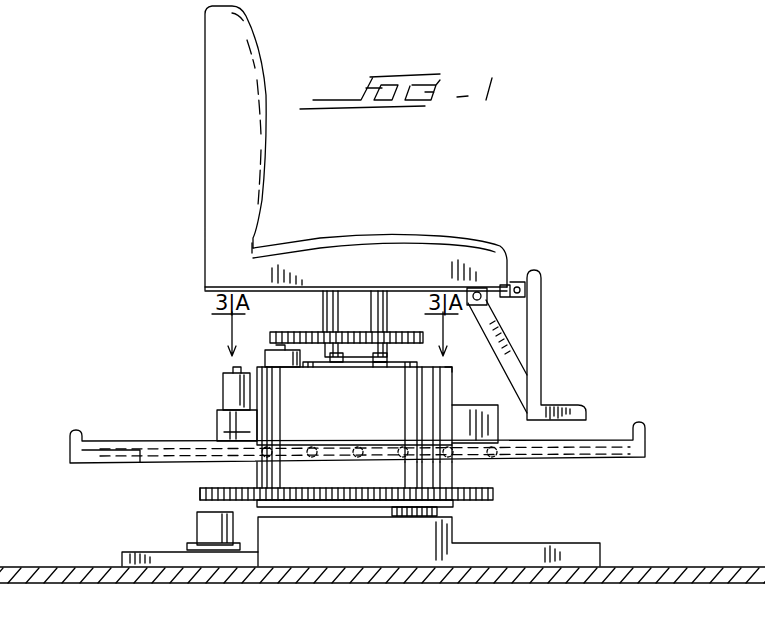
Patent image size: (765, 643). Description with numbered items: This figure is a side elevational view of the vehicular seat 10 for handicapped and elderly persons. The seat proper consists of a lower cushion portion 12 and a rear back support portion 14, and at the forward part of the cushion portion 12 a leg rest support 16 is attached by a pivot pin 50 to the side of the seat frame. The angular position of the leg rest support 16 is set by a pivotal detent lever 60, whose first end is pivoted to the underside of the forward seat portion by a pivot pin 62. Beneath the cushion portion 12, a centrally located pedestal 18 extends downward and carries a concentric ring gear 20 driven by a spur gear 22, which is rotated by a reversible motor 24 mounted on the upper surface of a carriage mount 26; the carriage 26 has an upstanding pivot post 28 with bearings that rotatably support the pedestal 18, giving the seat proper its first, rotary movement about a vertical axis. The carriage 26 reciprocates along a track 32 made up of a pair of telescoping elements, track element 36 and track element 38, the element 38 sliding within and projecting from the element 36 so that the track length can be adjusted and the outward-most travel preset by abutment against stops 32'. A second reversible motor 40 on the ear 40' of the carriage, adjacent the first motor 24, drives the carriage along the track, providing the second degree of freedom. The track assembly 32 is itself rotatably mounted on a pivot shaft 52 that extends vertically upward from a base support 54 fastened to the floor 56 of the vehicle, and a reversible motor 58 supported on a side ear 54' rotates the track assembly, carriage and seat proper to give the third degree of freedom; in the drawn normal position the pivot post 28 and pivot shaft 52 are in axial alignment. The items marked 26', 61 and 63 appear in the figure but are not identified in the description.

The vehicular seat 10 is at (557, 191).
The lower cushion portion 12 is at (360, 255).
The rear back support portion 14 is at (205, 128).
The leg rest support 16 is at (533, 378).
The pedestal 18 is at (325, 311).
The ring gear 20 is at (400, 341).
The spur gear 22 is at (270, 332).
The reversible motor 24 is at (265, 357).
The carriage mount 26 is at (377, 425).
The housing flange 26' is at (386, 379).
The pivot post 28 is at (448, 372).
The track 32 is at (592, 477).
The stops 32' is at (671, 421).
The track element 36 is at (100, 440).
The track element 38 is at (588, 440).
The second reversible motor 40 is at (208, 388).
The ear 40' is at (211, 423).
The pivot pin 50 is at (518, 288).
The pivot shaft 52 is at (455, 506).
The base support 54 is at (429, 541).
The side ear 54' is at (166, 543).
The floor 56 is at (356, 580).
The reversible motor 58 is at (197, 524).
The pivotal detent lever 60 is at (512, 358).
The gear 61 is at (495, 493).
The pivot pin 62 is at (477, 292).
The gear hub 63 is at (212, 480).